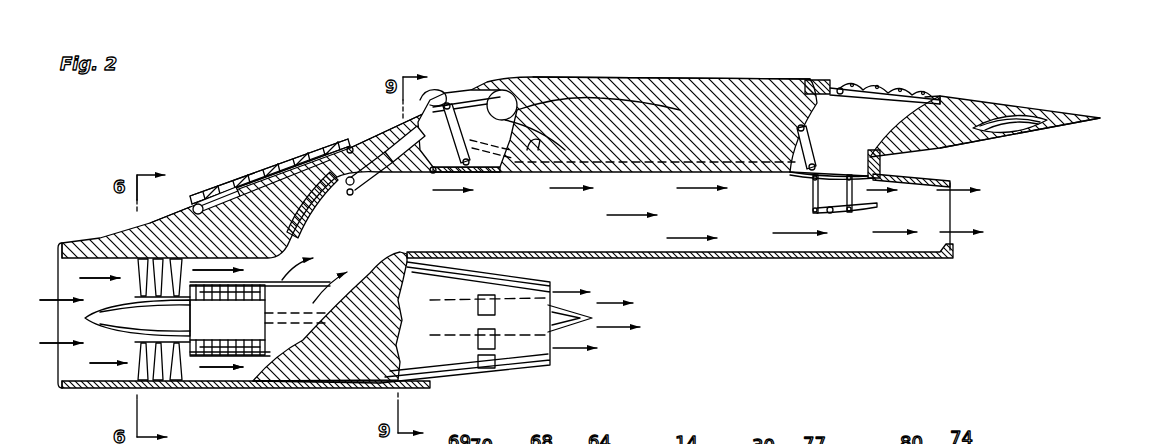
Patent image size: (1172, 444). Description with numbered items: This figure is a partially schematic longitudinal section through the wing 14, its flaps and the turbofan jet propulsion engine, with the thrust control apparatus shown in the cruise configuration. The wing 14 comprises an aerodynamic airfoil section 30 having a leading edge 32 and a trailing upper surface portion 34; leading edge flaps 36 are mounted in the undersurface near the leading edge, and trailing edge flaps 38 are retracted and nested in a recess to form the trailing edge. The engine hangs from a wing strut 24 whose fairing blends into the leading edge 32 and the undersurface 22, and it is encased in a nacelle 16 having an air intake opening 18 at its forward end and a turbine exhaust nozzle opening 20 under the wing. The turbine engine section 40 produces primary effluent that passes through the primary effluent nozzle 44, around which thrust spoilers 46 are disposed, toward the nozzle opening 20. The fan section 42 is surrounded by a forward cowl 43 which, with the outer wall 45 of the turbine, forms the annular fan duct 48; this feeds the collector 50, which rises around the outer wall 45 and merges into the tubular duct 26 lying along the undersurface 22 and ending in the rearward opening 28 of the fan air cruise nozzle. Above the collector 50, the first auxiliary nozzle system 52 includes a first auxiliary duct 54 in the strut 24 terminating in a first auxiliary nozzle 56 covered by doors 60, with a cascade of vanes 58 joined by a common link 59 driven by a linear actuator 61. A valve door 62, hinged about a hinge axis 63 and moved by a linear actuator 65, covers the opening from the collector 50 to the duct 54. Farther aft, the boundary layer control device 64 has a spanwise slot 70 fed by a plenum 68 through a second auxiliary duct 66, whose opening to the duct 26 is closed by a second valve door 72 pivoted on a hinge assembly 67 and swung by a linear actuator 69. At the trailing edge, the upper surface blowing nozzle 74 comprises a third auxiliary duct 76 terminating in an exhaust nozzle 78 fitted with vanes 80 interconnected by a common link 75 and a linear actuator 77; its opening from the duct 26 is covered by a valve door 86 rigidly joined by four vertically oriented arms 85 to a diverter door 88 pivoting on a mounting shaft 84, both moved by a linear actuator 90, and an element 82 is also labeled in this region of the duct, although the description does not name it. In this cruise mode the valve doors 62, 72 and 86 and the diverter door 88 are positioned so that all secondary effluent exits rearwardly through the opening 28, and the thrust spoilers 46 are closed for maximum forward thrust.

The wing 14 is at (700, 86).
The nacelle 16 is at (440, 377).
The air intake opening 18 is at (60, 253).
The turbine exhaust nozzle opening 20 is at (553, 353).
The undersurface of the wing 22 is at (623, 170).
The wing strut 24 is at (177, 207).
The tubular duct 26 is at (695, 223).
The rearward opening 28 is at (953, 248).
The aerodynamic airfoil section 30 is at (740, 77).
The leading edge 32 is at (468, 88).
The trailing upper surface portion 34 is at (970, 97).
The leading edge flaps 36 is at (523, 157).
The trailing edge flaps 38 is at (1043, 137).
The turbine engine section 40 is at (185, 372).
The fan section 42 is at (150, 365).
The forward cowl 43 is at (70, 388).
The primary effluent nozzle 44 is at (337, 393).
The outer wall of the turbine engine 45 is at (250, 385).
The thrust spoilers 46 is at (478, 360).
The fan duct 48 is at (268, 372).
The intermediate duct (collector) 50 is at (330, 279).
The first auxiliary nozzle system 52 is at (308, 138).
The first auxiliary duct 54 is at (263, 193).
The first auxiliary nozzle 56 is at (352, 147).
The vanes 58 is at (280, 167).
The common link 59 is at (297, 258).
The doors 60 is at (330, 138).
The linear actuator 61 is at (217, 190).
The valve door 62 is at (320, 210).
The hinge axis 63 is at (363, 185).
The boundary layer control device 64 is at (528, 110).
The linear actuator 65 is at (410, 170).
The second auxiliary duct 66 is at (535, 100).
The hinge assembly 67 is at (433, 173).
The boundary layer air plenum 68 is at (520, 97).
The linear actuator 69 is at (444, 103).
The spanwise slot 70 is at (440, 98).
The second valve door 72 is at (482, 177).
The trailing edge upper surface blowing nozzle 74 is at (880, 78).
The common link 75 is at (853, 87).
The third auxiliary duct 76 is at (840, 146).
The linear actuator 77 is at (820, 87).
The exhaust nozzle 78 is at (930, 98).
The vanes 80 is at (890, 81).
The flap 82 is at (767, 222).
The mounting shaft 84 is at (837, 223).
The vertically oriented arms 85 is at (813, 194).
The valve door 86 is at (828, 165).
The diverter door 88 is at (767, 210).
The linear actuator 90 is at (813, 137).